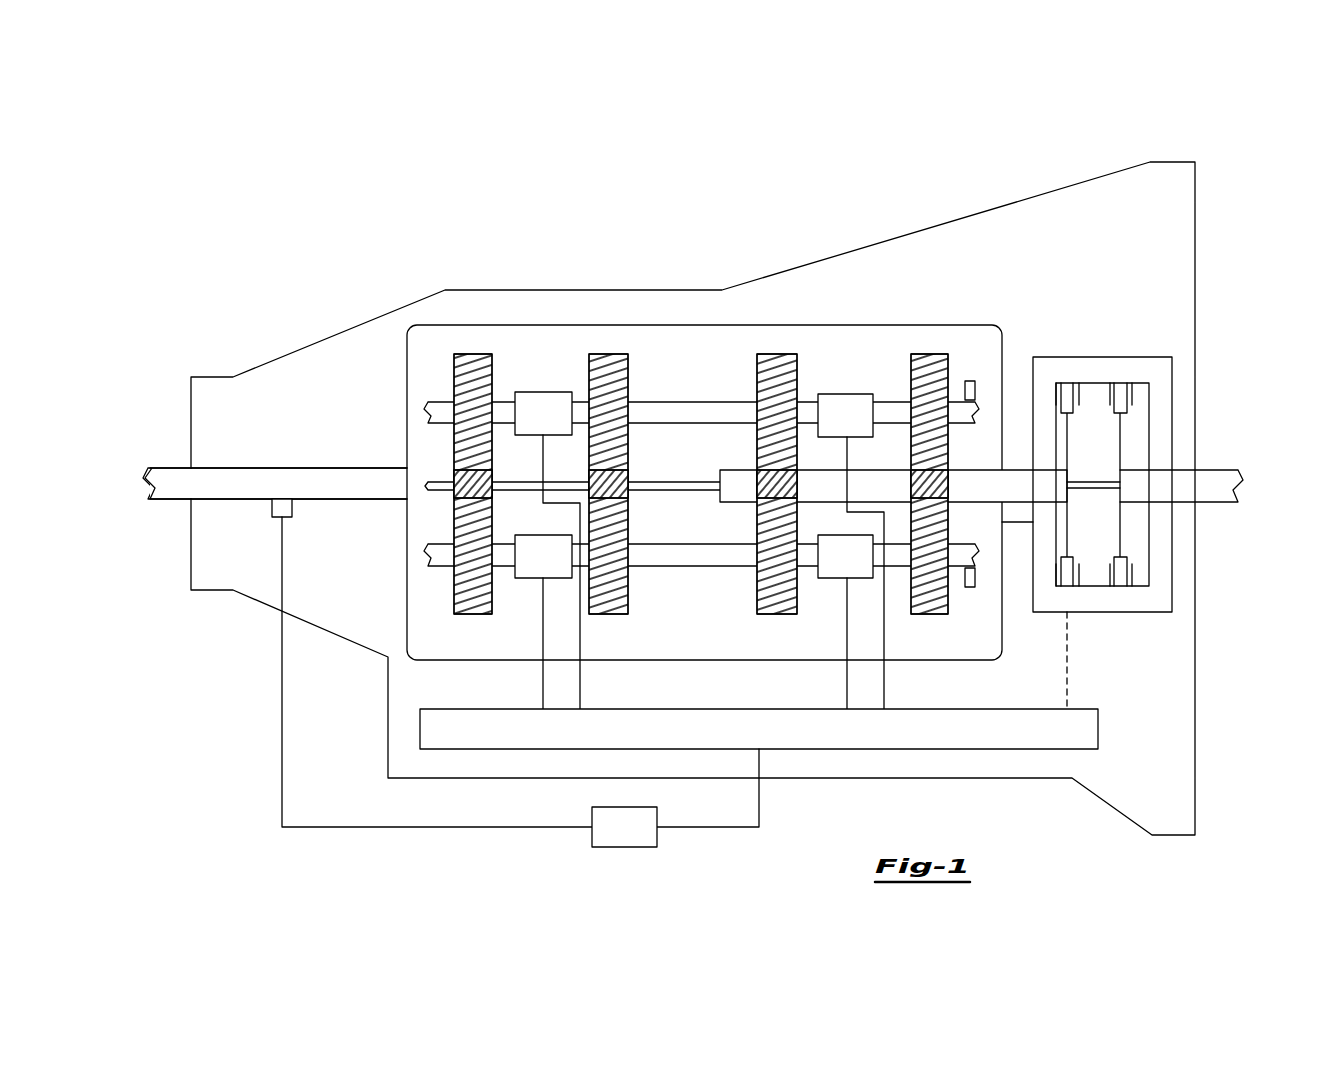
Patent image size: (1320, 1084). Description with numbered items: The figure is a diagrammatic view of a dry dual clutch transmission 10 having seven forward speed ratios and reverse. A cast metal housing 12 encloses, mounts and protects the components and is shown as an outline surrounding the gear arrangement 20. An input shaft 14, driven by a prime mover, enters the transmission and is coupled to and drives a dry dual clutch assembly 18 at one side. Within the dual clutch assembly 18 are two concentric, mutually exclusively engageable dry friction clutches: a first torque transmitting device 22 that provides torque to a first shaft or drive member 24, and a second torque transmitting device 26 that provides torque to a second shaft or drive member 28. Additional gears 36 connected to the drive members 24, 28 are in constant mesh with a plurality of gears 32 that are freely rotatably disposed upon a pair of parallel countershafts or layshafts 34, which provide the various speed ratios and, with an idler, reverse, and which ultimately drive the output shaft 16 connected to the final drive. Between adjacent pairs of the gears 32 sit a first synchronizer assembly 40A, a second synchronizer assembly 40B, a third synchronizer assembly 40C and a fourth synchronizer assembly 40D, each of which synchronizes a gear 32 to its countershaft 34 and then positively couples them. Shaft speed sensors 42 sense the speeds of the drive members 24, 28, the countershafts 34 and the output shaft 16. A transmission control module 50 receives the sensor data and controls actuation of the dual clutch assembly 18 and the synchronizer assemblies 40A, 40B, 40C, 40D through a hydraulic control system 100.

The dual clutch transmission 10 is at (1228, 188).
The housing 12 is at (495, 290).
The input shaft 14 is at (1220, 468).
The output shaft 16 is at (165, 468).
The dry dual clutch assembly 18 is at (1100, 357).
The gear arrangement 20 is at (435, 325).
The first torque transmitting device 22 is at (1085, 577).
The first shaft or drive member 24 is at (1025, 468).
The second torque transmitting device 26 is at (1137, 577).
The second shaft or drive member 28 is at (442, 482).
The plurality of gears 32 is at (608, 353).
The countershafts or layshafts 34 is at (702, 402).
The additional gears 36 is at (452, 493).
The first synchronizer assembly 40A is at (554, 425).
The second synchronizer assembly 40B is at (554, 568).
The third synchronizer assembly 40C is at (856, 427).
The fourth synchronizer assembly 40D is at (856, 568).
The shaft speed sensors 42 is at (272, 510).
The transmission control module 50 is at (630, 840).
The hydraulic control system 100 is at (774, 738).